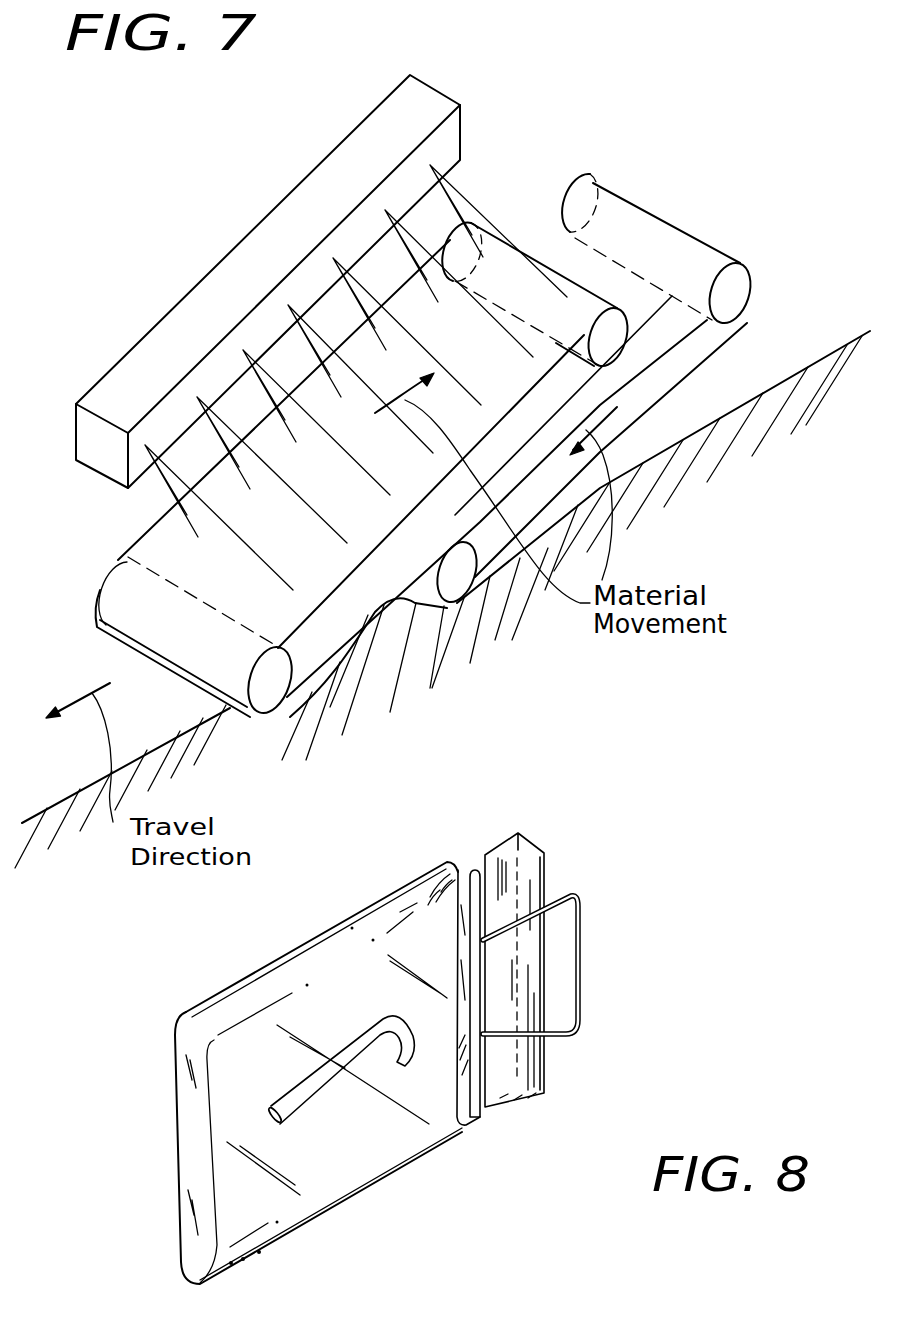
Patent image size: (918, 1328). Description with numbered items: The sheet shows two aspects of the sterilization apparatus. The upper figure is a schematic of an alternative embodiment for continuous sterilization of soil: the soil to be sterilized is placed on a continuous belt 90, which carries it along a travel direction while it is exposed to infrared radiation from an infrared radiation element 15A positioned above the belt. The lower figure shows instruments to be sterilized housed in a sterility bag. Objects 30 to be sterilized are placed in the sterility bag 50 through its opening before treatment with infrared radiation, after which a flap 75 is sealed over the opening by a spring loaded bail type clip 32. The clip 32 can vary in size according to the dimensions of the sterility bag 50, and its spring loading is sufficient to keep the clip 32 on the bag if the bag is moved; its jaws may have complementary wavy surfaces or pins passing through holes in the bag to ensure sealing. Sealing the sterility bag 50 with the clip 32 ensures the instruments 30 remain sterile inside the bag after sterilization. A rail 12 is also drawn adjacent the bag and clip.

In FIG. 7, the infrared radiation element 15A is at (200, 288).
In FIG. 7, the continuous belt 90 is at (498, 262).
In FIG. 8, the sterility bag 50 is at (342, 920).
In FIG. 8, the objects to be sterilized 30 is at (335, 1092).
In FIG. 8, the channel rail 12 is at (497, 840).
In FIG. 8, the spring loaded bail type clip 32 is at (545, 1066).
In FIG. 8, the flap 75 is at (472, 1126).